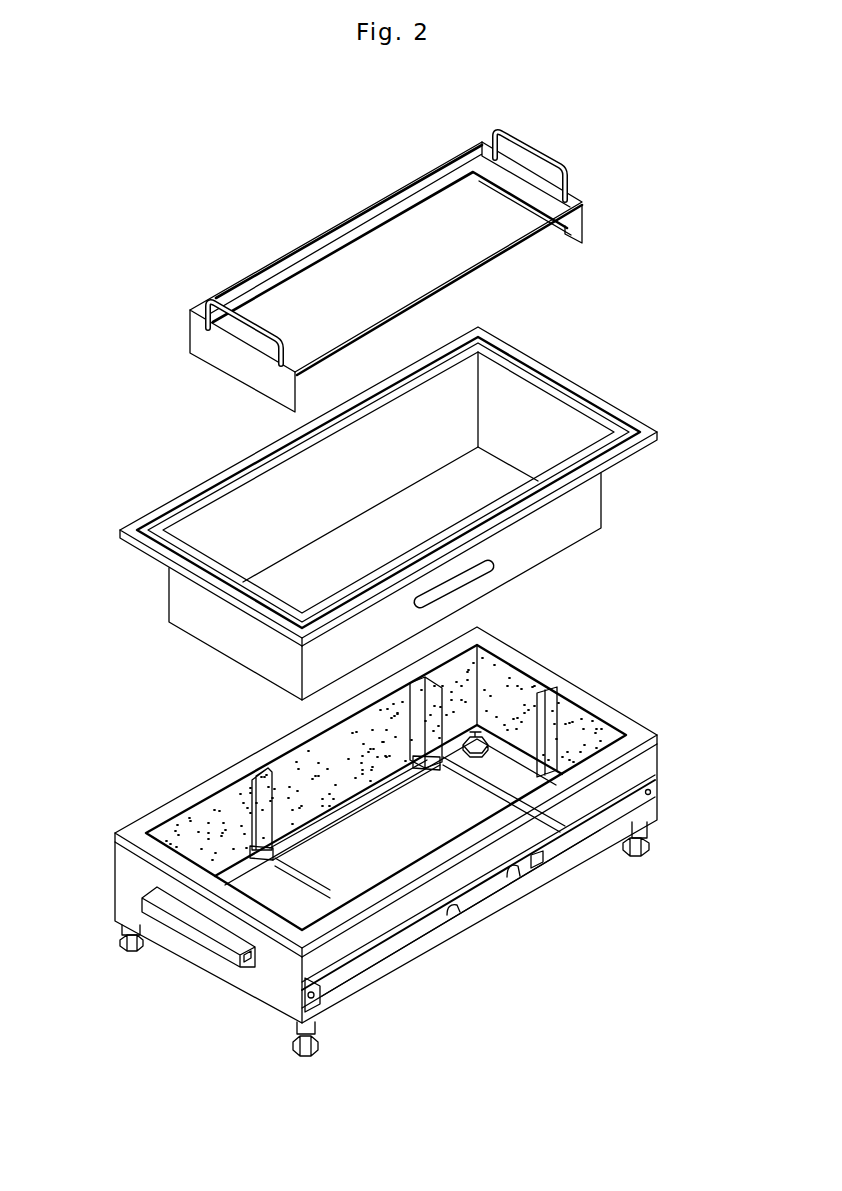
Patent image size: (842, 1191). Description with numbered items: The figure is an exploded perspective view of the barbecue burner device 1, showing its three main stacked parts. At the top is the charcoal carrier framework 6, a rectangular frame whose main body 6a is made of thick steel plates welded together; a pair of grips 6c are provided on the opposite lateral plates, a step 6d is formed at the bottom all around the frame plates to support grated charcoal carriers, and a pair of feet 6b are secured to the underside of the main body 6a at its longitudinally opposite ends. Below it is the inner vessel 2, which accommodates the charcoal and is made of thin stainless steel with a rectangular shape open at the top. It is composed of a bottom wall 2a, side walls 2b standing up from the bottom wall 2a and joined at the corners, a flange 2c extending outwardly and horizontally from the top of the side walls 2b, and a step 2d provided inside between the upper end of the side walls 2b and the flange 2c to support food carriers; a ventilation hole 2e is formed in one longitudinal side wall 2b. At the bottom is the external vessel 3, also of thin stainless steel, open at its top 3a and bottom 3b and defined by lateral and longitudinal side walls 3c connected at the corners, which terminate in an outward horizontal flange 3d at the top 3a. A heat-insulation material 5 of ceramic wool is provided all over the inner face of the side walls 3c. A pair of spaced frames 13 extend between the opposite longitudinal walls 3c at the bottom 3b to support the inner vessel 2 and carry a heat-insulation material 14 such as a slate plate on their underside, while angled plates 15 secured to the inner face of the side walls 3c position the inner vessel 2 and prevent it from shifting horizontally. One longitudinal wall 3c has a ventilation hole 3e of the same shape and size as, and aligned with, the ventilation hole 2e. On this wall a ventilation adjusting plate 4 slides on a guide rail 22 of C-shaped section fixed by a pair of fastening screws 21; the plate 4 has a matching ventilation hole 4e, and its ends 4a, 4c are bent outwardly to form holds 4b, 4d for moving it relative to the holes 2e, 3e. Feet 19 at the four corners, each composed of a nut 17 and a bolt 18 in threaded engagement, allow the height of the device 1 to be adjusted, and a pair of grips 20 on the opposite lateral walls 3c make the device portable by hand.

The barbecue burner device 1 is at (345, 150).
The inner vessel 2 is at (205, 485).
The bottom wall 2a is at (497, 480).
The side walls 2b is at (270, 500).
The flange 2c is at (605, 405).
The step 2d is at (618, 418).
The ventilation hole 2e is at (478, 577).
The external vessel 3 is at (228, 765).
The top 3a is at (163, 805).
The bottom 3b is at (188, 968).
The side walls 3c is at (122, 878).
The housing rim side 3d is at (636, 727).
The ventilation hole 3e is at (503, 890).
The ventilation adjusting plate 4 is at (436, 955).
The end 4a is at (535, 878).
The hold 4b is at (517, 869).
The end 4c is at (335, 990).
The hold 4d is at (325, 995).
The ventilation hole 4e is at (463, 905).
The heat-insulation material 5 is at (198, 840).
The charcoal carrier framework 6 is at (300, 240).
The main body 6a is at (270, 268).
The feet 6b is at (205, 348).
The grips 6c is at (222, 295).
The step 6d is at (432, 192).
The frames 13 is at (422, 767).
The heat-insulation material 14 is at (355, 845).
The angled plates 15 is at (437, 683).
The nut 17 is at (122, 932).
The bolt 18 is at (124, 950).
The feet 19 is at (70, 938).
The grips 20 is at (228, 955).
The fastening screws 21 is at (650, 793).
The guide rail 22 is at (395, 965).